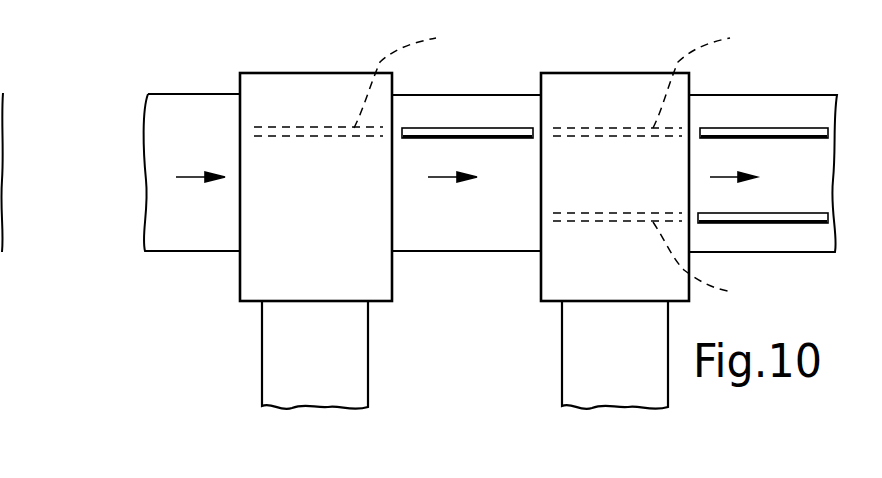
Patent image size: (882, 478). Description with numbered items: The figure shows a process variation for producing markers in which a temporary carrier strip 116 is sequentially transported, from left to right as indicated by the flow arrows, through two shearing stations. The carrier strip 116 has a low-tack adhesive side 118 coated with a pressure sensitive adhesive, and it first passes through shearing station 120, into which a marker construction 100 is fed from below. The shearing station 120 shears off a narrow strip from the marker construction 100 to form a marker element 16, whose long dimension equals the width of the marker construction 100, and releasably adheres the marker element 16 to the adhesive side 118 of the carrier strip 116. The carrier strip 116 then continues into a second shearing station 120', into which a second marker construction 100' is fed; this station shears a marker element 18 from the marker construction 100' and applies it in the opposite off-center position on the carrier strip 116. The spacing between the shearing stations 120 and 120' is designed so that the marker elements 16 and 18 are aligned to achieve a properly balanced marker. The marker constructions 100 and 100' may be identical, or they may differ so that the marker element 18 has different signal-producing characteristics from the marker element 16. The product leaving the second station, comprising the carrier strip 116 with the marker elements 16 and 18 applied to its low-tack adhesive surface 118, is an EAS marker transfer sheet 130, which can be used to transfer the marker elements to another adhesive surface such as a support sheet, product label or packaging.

The temporary carrier strip 116 is at (187, 88).
The low-tack adhesive side 118 is at (217, 110).
The shearing station 120 is at (266, 188).
The marker construction 100 is at (268, 355).
The second shearing station 120' is at (574, 191).
The marker construction 100' is at (570, 355).
The marker element 16 is at (418, 128).
The marker element 18 is at (718, 223).
The EAS marker transfer sheet 130 is at (822, 262).